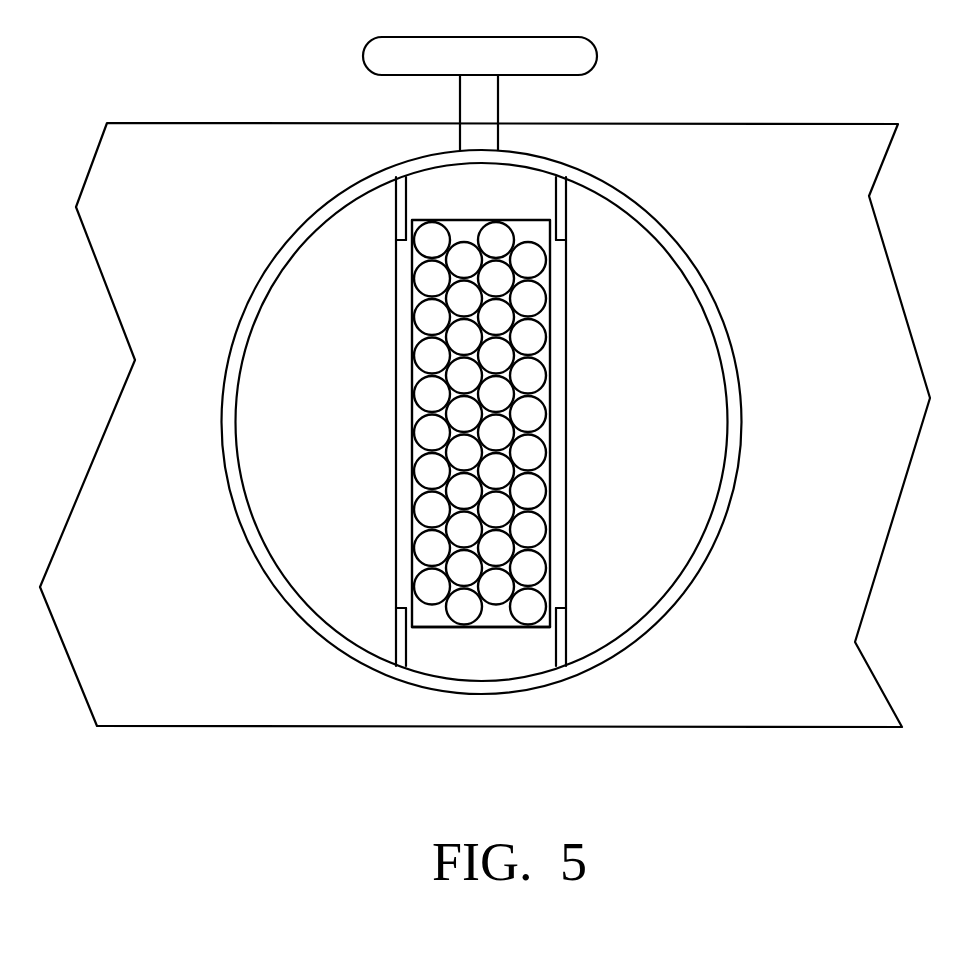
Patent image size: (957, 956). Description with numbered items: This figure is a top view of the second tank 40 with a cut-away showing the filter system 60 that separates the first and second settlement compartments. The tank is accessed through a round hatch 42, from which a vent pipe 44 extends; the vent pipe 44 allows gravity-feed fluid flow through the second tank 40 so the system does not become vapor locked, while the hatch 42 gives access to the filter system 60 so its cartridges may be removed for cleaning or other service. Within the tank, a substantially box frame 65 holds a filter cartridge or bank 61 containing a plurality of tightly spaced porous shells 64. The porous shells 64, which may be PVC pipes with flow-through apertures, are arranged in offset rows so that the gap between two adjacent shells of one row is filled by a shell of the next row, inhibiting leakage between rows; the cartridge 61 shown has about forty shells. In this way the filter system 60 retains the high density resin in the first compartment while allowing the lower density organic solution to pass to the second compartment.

The second tank 40 is at (815, 140).
The hatch 42 is at (677, 243).
The vent pipe 44 is at (593, 47).
The filter system 60 is at (616, 408).
The filter cartridge 61 is at (472, 210).
The porous shells 64 is at (412, 434).
The box frame 65 is at (483, 629).